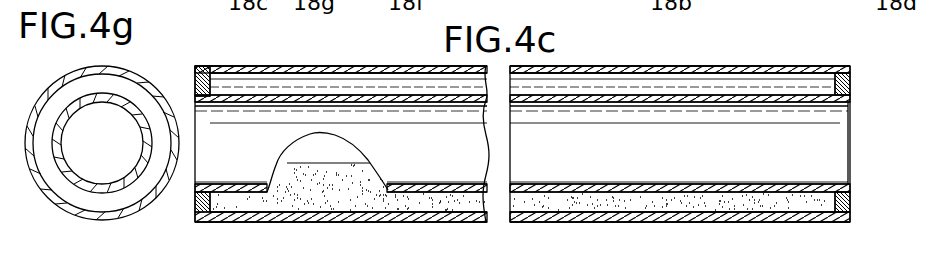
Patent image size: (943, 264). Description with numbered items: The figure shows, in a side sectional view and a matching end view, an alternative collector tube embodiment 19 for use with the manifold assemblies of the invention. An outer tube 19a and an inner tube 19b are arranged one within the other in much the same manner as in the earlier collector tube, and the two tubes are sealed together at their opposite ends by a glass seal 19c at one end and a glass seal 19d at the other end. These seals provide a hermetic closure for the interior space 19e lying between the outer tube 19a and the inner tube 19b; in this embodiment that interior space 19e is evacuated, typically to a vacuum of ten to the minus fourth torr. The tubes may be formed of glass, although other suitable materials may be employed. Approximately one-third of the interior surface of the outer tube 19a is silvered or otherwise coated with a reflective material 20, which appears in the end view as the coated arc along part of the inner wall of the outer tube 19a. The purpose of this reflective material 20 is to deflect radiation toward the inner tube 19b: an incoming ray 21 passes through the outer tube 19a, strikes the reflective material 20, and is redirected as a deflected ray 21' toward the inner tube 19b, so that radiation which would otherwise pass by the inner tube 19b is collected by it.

In FIG. 4c, the embodiment 19 is at (687, 63).
In FIG. 4c, the outer tube 19a is at (280, 66).
In FIG. 4c, the inner tube 19b is at (651, 196).
In FIG. 4c, the glass seal 19c is at (211, 197).
In FIG. 4c, the glass seal 19d is at (850, 197).
In FIG. 4c, the interior space 19e is at (772, 88).
In FIG. 4g, the reflective material 20 is at (62, 185).
In FIG. 4c, the reflective material 20 is at (318, 194).
In FIG. 4g, the ray 21 is at (117, 116).
In FIG. 4g, the deflected ray 21' is at (102, 144).